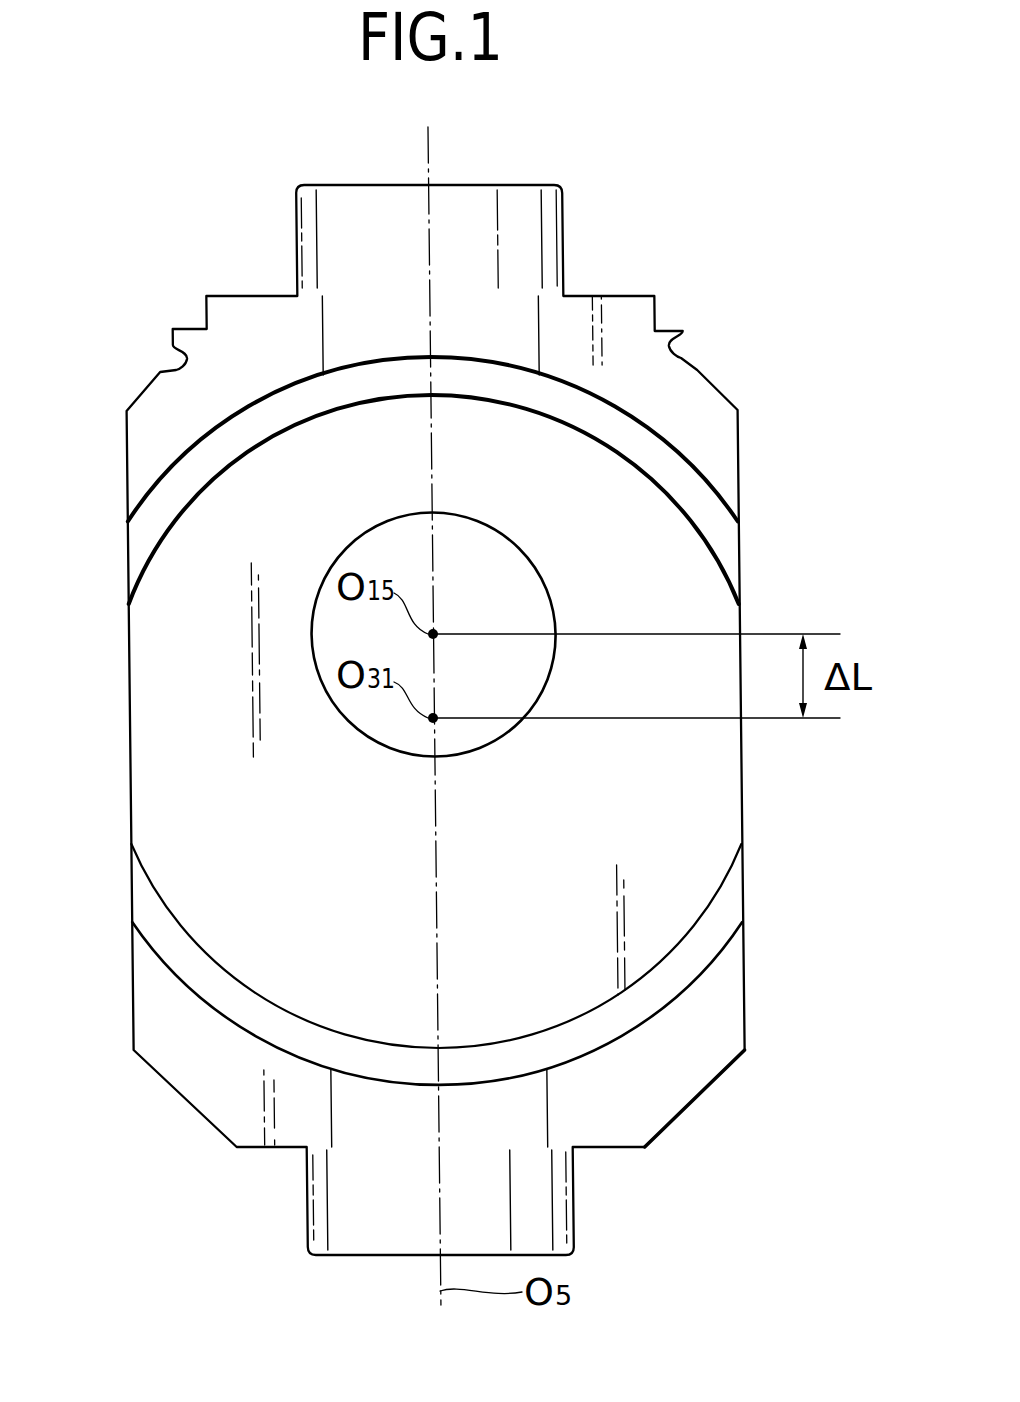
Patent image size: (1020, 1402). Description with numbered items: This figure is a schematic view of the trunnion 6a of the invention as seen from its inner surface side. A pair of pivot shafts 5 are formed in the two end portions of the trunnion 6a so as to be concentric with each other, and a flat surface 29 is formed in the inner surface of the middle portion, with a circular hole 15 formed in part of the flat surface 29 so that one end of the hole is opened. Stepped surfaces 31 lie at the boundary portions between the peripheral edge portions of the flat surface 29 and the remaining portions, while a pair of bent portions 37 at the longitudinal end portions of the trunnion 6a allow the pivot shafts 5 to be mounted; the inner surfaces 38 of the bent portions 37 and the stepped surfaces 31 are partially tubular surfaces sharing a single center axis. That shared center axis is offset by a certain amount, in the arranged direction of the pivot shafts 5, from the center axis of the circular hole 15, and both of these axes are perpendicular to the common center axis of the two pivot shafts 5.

The pivot shaft 5 is at (550, 233).
The trunnion 6a is at (690, 1083).
The circular hole 15 is at (517, 545).
The flat surface 29 is at (708, 788).
The stepped surface 31 is at (284, 432).
The bent portion 37 is at (707, 393).
The inner surface of bent portion 38 is at (194, 448).